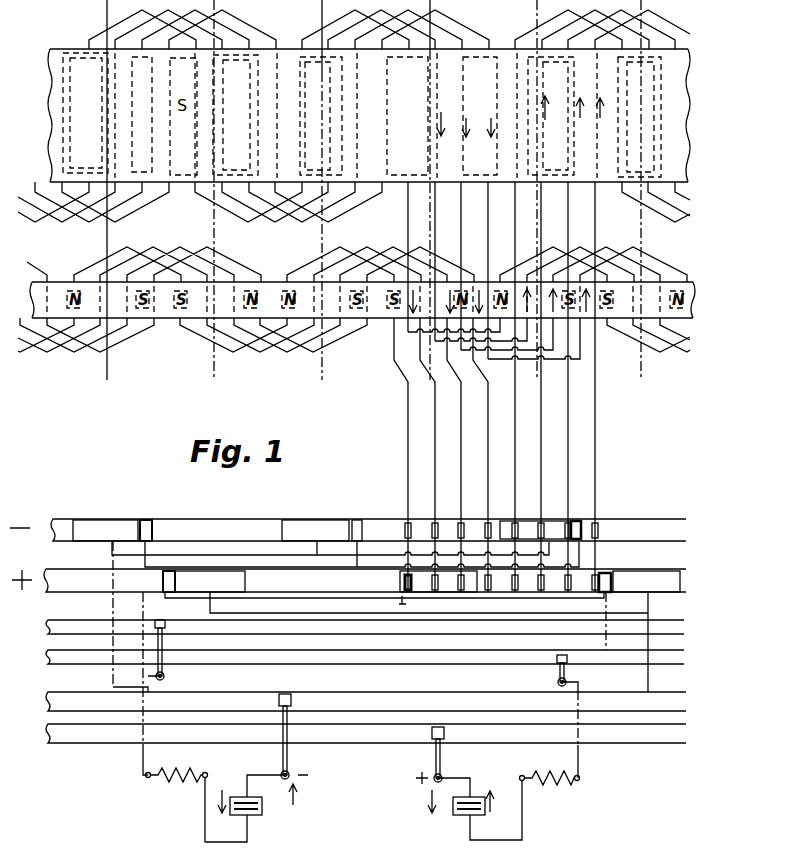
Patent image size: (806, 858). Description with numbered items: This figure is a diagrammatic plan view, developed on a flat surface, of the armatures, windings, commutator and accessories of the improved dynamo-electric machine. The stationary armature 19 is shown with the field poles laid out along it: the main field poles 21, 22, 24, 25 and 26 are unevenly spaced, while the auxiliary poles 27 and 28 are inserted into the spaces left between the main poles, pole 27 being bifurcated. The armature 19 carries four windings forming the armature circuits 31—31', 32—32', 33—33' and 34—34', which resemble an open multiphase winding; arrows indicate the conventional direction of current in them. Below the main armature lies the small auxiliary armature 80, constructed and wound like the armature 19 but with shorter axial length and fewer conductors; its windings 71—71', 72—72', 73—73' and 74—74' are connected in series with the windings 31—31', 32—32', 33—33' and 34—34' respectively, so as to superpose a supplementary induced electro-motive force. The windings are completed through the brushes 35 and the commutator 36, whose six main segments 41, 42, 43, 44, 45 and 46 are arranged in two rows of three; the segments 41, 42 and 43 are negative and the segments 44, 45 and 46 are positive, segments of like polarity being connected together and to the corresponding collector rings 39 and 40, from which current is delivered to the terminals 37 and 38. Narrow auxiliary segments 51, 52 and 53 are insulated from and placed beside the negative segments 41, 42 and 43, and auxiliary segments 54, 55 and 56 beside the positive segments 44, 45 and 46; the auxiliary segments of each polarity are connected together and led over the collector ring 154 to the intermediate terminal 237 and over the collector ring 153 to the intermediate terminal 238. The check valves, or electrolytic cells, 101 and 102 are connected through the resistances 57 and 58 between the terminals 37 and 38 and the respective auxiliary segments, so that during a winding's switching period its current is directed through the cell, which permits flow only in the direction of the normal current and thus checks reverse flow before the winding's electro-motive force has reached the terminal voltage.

The armature 19 is at (683, 172).
The main field pole 21 is at (70, 149).
The main field pole 22 is at (218, 151).
The main field pole 24 is at (388, 155).
The main field pole 25 is at (532, 156).
The main field pole 26 is at (618, 157).
The auxiliary pole 27 is at (182, 153).
The auxiliary pole 28 is at (480, 116).
The armature circuit 31 is at (404, 455).
The armature circuit 32 is at (431, 455).
The armature circuit 33 is at (457, 455).
The armature circuit 34 is at (484, 455).
The armature circuit 31' is at (513, 387).
The armature circuit 32' is at (539, 387).
The armature circuit 33' is at (566, 387).
The armature circuit 34' is at (593, 387).
The brushes 35 is at (404, 522).
The commutator 36 is at (686, 582).
The terminal 37 is at (289, 773).
The terminal 38 is at (435, 776).
The collector ring 39 is at (688, 702).
The collector ring 40 is at (688, 734).
The commutator segment 41 is at (548, 535).
The commutator segment 42 is at (105, 530).
The commutator segment 43 is at (315, 530).
The commutator segment 44 is at (427, 596).
The commutator segment 45 is at (646, 581).
The commutator segment 46 is at (210, 581).
The auxiliary segment 51 is at (584, 528).
The auxiliary segment 52 is at (153, 530).
The auxiliary segment 53 is at (363, 531).
The auxiliary segment 54 is at (404, 596).
The auxiliary segment 55 is at (612, 575).
The auxiliary segment 56 is at (163, 582).
The resistance 57 is at (180, 766).
The resistance 58 is at (553, 775).
The auxiliary armature winding 71 is at (339, 262).
The auxiliary armature winding 72 is at (367, 255).
The auxiliary armature winding 73 is at (393, 253).
The auxiliary armature winding 74 is at (420, 255).
The auxiliary armature winding 71' is at (553, 262).
The auxiliary armature winding 72' is at (580, 257).
The auxiliary armature winding 73' is at (606, 257).
The auxiliary armature winding 74' is at (633, 256).
The auxiliary armature 80 is at (688, 308).
The check valve 101 is at (256, 816).
The check valve 102 is at (458, 814).
The collector ring 153 is at (674, 660).
The collector ring 154 is at (674, 630).
The intermediate terminal 237 is at (177, 656).
The intermediate terminal 238 is at (545, 673).